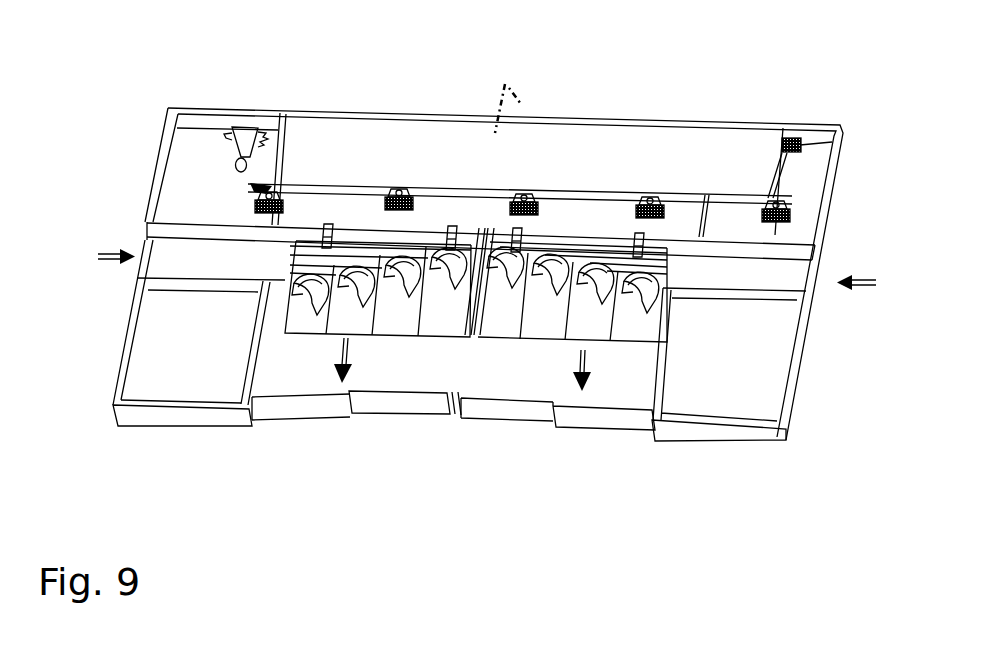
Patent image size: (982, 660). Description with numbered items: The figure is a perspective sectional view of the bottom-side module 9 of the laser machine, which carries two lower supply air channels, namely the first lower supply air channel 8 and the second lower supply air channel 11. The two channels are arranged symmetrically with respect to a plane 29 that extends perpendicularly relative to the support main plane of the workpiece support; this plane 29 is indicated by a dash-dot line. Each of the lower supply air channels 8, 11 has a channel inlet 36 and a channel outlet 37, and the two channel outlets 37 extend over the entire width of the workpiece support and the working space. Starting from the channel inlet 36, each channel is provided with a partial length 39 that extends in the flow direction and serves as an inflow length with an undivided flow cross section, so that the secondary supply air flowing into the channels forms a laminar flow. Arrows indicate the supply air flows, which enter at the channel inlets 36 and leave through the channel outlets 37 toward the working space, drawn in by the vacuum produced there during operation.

The bottom-side module 9 is at (805, 449).
The channel inlet 36 is at (146, 238).
The partial length 39 is at (213, 268).
The channel outlet 37 is at (412, 377).
The second lower supply air channel 11 is at (303, 362).
The first lower supply air channel 8 is at (608, 362).
The plane 29 is at (503, 79).